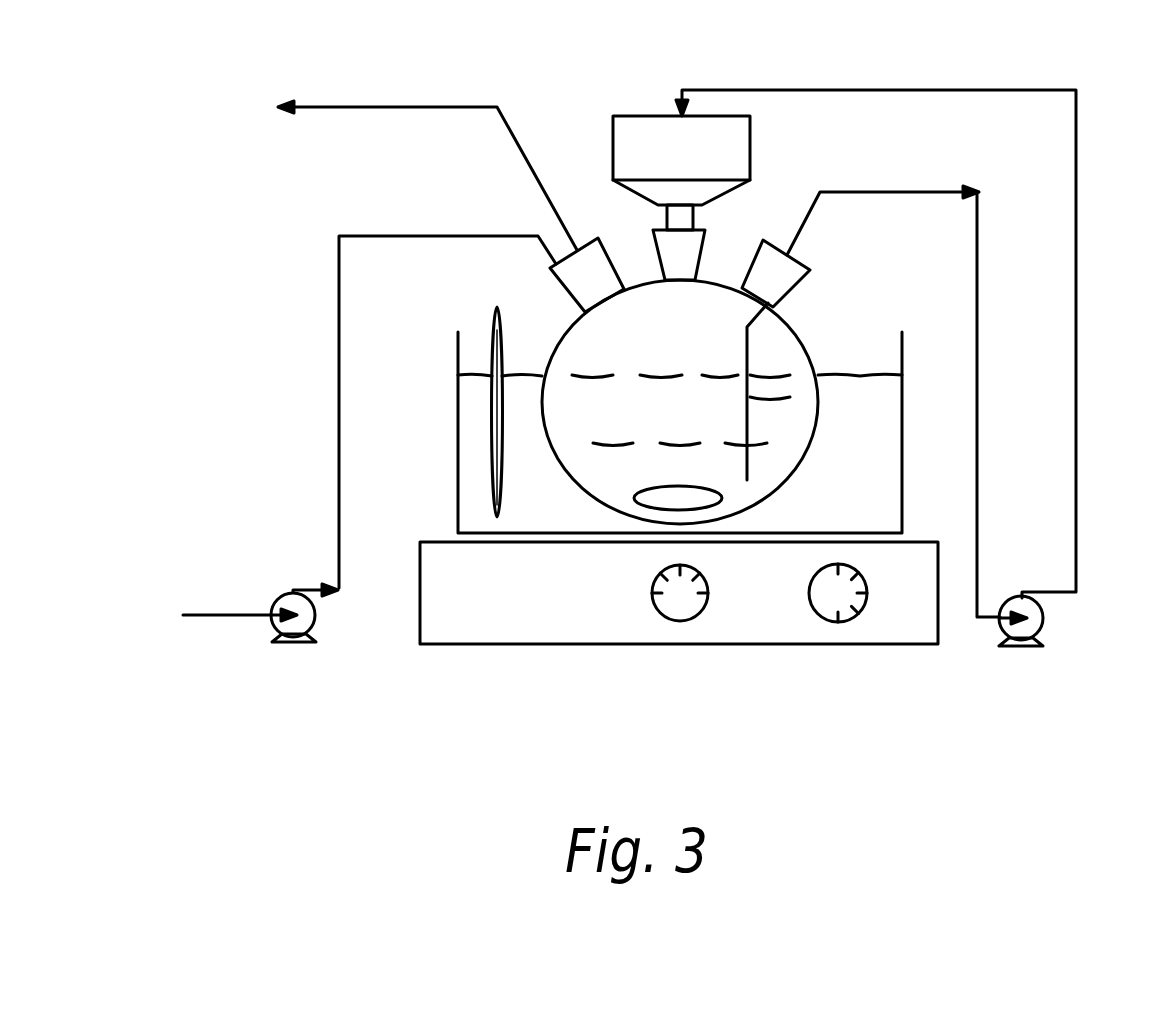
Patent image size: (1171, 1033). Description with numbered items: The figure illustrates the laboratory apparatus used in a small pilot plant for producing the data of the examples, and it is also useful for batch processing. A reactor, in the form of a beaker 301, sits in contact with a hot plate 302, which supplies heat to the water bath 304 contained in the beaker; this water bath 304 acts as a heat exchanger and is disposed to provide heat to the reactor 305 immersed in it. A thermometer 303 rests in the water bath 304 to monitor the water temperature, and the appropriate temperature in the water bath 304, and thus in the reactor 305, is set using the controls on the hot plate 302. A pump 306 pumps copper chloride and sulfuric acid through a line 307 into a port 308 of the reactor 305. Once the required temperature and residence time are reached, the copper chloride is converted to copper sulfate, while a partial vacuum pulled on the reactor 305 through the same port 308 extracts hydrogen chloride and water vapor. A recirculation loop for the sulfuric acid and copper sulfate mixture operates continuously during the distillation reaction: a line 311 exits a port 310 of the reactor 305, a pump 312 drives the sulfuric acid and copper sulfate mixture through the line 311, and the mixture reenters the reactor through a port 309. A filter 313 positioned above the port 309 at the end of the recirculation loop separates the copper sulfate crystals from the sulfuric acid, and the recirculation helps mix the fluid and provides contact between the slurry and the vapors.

The reactor (beaker) 301 is at (458, 395).
The hot plate 302 is at (498, 645).
The thermometer 303 is at (493, 315).
The water bath (heat exchanger) 304 is at (551, 503).
The reactor 305 is at (802, 340).
The pump 306 is at (318, 617).
The line 307 is at (339, 390).
The port 308 is at (594, 240).
The port 309 is at (708, 244).
The port 310 is at (810, 277).
The line 311 is at (977, 333).
The pump 312 is at (1043, 620).
The filter 313 is at (643, 114).